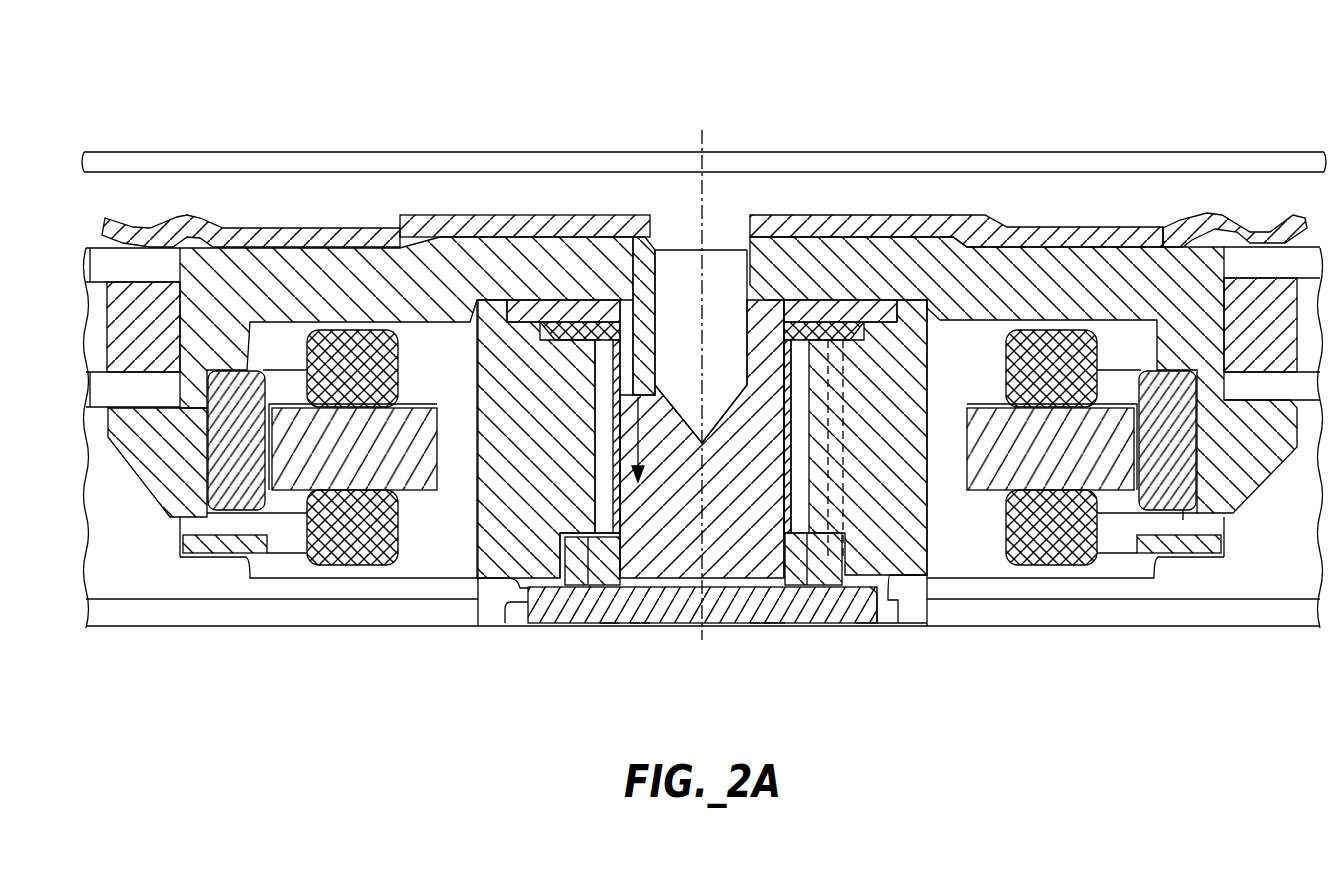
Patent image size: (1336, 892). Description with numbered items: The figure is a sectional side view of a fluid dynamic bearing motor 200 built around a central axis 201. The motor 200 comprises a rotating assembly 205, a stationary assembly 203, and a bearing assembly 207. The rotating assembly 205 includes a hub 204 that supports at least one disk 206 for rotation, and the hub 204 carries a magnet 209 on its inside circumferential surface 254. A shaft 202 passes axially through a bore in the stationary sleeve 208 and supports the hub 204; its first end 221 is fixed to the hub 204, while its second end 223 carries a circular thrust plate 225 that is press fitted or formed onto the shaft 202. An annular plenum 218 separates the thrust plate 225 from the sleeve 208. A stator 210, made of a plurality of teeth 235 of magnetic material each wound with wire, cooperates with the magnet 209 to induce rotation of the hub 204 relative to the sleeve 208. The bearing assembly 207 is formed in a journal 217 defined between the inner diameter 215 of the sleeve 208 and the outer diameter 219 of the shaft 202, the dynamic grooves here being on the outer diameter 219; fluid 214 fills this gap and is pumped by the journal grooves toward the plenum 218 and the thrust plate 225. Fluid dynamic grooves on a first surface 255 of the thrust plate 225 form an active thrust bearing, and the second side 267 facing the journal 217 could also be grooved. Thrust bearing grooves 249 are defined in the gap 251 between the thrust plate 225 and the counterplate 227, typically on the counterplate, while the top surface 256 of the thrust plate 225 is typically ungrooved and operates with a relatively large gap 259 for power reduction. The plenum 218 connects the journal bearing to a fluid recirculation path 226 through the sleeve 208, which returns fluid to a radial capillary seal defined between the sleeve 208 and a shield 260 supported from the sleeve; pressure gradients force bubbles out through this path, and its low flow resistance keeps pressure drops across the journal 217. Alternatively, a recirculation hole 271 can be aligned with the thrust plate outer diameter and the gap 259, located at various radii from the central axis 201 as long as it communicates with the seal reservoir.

The fluid dynamic bearing motor 200 is at (296, 664).
The central axis 201 is at (700, 138).
The shaft 202 is at (722, 277).
The stationary assembly 203 is at (980, 220).
The hub 204 is at (1157, 267).
The rotating assembly 205 is at (1113, 198).
The disk 206 is at (1307, 258).
The bearing assembly 207 is at (560, 527).
The stationary sleeve 208 is at (907, 560).
The magnet 209 is at (604, 465).
The stator 210 is at (1067, 553).
The fluid 214 is at (835, 347).
The inner diameter of the sleeve 215 is at (660, 340).
The journal 217 is at (560, 396).
The annular plenum 218 is at (590, 598).
The outer diameter of the shaft 219 is at (617, 435).
The first end of the shaft 221 is at (643, 245).
The second end of the shaft 223 is at (720, 623).
The thrust plate 225 is at (803, 623).
The fluid recirculation path 226 is at (640, 626).
The counterplate 227 is at (567, 598).
The teeth 235 is at (1052, 465).
The thrust bearing grooves 249 is at (608, 625).
The gap 251 is at (773, 623).
The inside circumferential surface 254 is at (1167, 495).
The first surface of the thrust plate 255 is at (760, 623).
The top surface of the thrust plate 256 is at (893, 623).
The gap 259 is at (863, 623).
The shield 260 is at (797, 323).
The second side of the thrust plate 267 is at (514, 612).
The recirculation hole 271 is at (865, 360).